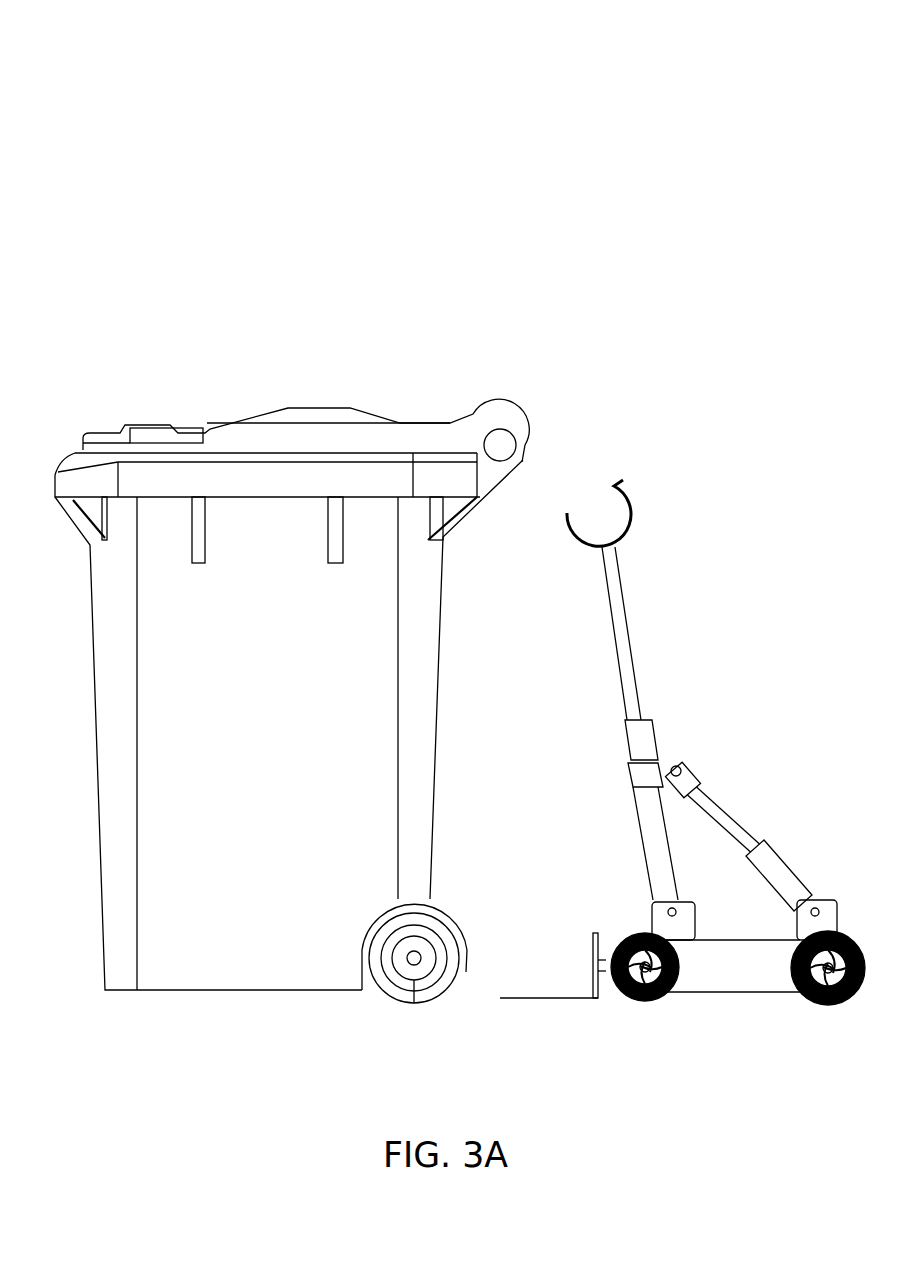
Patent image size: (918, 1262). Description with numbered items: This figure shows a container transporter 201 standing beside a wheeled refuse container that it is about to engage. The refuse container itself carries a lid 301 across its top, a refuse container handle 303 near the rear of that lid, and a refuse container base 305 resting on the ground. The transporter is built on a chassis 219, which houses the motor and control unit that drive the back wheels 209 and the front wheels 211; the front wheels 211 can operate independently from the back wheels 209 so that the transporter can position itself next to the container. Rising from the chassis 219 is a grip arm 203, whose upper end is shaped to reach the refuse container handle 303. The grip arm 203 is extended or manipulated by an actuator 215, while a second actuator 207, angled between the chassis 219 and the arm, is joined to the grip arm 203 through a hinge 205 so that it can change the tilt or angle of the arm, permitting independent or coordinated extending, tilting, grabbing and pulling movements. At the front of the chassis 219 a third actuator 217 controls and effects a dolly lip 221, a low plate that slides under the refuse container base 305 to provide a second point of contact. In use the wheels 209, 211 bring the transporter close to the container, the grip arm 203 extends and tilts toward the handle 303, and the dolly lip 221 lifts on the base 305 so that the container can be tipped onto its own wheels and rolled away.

The container transporter 201 is at (705, 97).
The grip arm 203 is at (633, 498).
The hinge 205 is at (672, 765).
The actuator 207 is at (730, 813).
The back wheels 209 is at (828, 1005).
The front wheels 211 is at (650, 1002).
The actuator 215 is at (634, 627).
The actuator 217 is at (617, 938).
The chassis 219 is at (735, 995).
The dolly lip 221 is at (535, 1002).
The lid 301 is at (288, 406).
The refuse container handle 303 is at (522, 462).
The refuse container base 305 is at (247, 992).